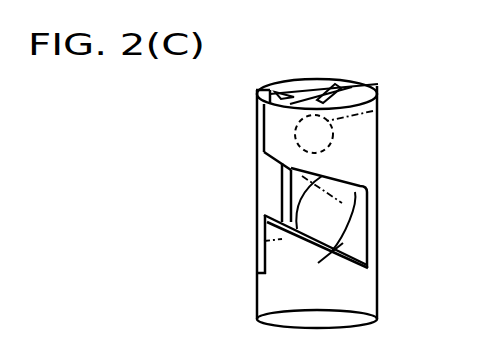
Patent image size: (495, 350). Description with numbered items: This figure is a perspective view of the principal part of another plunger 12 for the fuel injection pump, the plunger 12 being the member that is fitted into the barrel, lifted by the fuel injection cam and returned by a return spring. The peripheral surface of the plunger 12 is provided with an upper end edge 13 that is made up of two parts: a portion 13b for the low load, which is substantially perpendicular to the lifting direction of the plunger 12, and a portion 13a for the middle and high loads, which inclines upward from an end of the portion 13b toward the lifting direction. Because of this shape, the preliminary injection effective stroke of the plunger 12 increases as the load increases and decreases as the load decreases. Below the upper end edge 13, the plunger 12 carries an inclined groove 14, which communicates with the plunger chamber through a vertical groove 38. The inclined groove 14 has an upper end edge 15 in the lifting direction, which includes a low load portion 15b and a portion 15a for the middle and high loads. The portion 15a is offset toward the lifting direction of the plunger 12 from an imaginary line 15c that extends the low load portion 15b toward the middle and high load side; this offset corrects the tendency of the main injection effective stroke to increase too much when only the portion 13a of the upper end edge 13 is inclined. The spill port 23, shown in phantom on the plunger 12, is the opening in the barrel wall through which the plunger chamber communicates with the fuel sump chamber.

The plunger 12 is at (368, 132).
The upper end edge 13 is at (338, 87).
The portion for the middle and high loads 13a is at (310, 83).
The portion for the low load 13b is at (273, 85).
The inclined groove 14 is at (359, 232).
The upper end edge of the inclined groove 15 is at (351, 173).
The portion for the middle and high loads 15a is at (316, 260).
The low load portion 15b is at (262, 169).
The imaginary line 15c is at (262, 242).
The spill port 23 is at (373, 111).
The vertical groove 38 is at (258, 124).